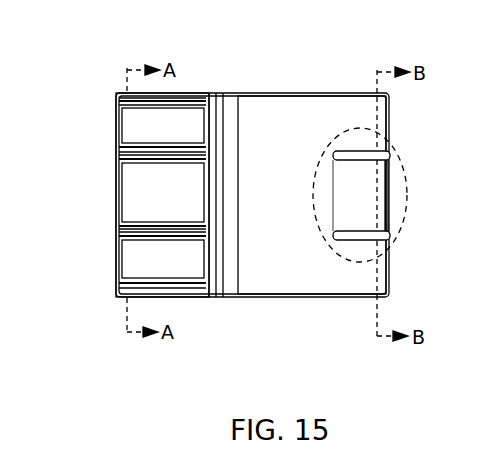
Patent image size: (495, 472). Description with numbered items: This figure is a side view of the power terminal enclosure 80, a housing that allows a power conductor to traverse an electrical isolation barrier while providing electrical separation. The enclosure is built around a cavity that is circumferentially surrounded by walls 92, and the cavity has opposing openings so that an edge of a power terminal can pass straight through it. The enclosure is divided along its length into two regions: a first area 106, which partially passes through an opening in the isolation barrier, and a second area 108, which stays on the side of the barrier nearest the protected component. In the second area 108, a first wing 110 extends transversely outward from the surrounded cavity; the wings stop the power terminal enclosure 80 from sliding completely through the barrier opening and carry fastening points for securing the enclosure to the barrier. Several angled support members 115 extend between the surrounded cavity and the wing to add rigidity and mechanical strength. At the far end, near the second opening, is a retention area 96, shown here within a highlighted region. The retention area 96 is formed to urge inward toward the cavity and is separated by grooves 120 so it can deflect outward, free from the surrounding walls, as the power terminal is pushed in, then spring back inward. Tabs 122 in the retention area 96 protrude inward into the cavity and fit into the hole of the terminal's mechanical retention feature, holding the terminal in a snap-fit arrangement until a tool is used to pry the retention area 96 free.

The power terminal enclosure 80 is at (134, 44).
The walls 92 is at (270, 110).
The retention area 96 is at (408, 198).
The first area 106 is at (299, 358).
The second area 108 is at (139, 356).
The first wing 110 is at (217, 105).
The angled support members 115 is at (197, 108).
The grooves 120 is at (357, 160).
The tabs 122 is at (392, 182).